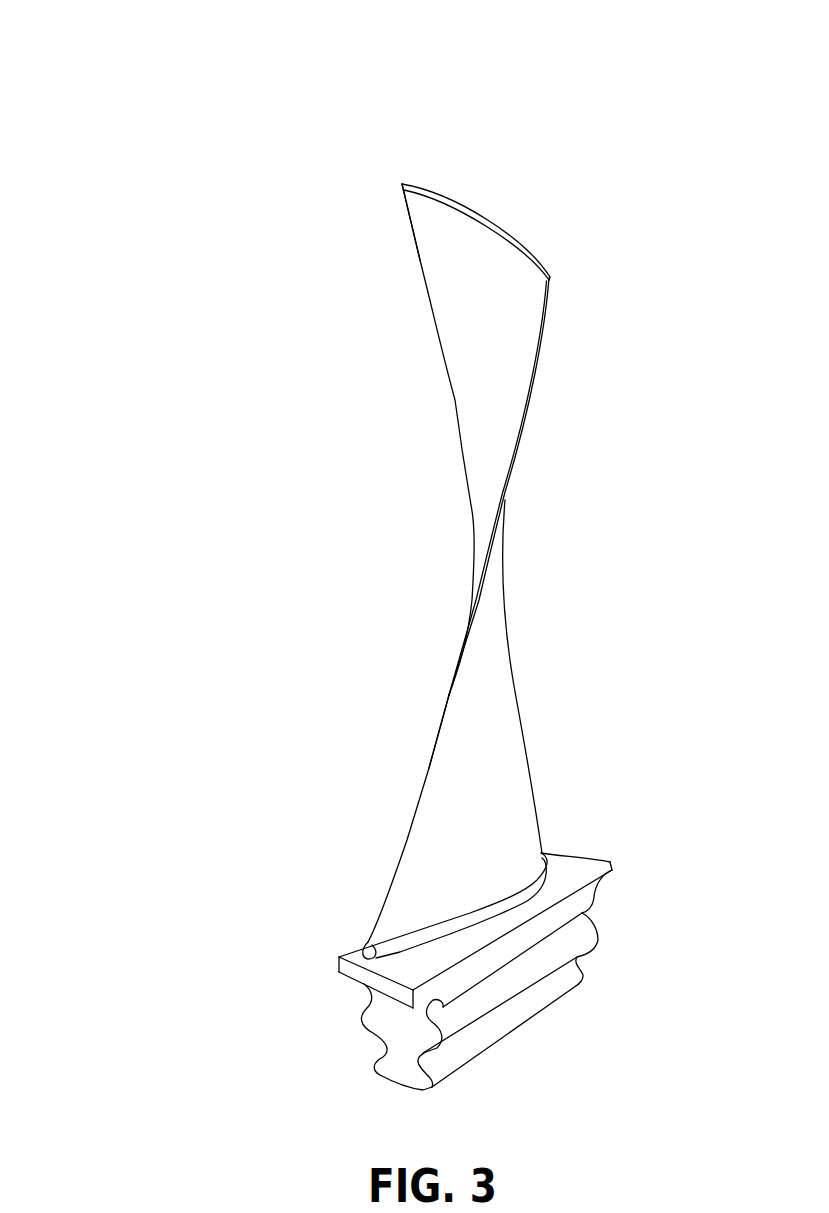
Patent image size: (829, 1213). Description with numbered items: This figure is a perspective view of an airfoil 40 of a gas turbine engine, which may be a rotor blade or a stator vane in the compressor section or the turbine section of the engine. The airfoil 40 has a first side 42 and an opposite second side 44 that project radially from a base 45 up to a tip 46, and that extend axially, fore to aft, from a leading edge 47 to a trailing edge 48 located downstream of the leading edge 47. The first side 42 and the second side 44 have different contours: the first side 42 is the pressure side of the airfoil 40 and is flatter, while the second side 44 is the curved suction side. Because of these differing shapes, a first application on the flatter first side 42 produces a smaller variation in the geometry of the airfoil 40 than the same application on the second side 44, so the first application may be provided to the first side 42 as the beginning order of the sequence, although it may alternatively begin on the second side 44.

The airfoil 40 is at (399, 557).
The first side 42 is at (485, 348).
The second side 44 is at (497, 737).
The base 45 is at (372, 869).
The tip 46 is at (498, 200).
The leading edge 47 is at (430, 767).
The trailing edge 48 is at (405, 212).